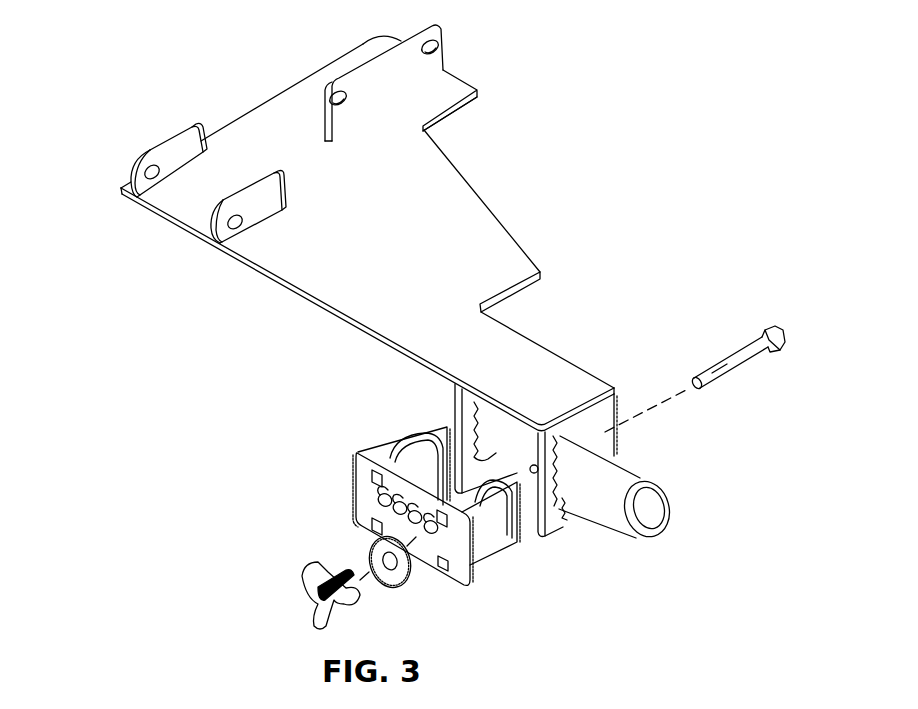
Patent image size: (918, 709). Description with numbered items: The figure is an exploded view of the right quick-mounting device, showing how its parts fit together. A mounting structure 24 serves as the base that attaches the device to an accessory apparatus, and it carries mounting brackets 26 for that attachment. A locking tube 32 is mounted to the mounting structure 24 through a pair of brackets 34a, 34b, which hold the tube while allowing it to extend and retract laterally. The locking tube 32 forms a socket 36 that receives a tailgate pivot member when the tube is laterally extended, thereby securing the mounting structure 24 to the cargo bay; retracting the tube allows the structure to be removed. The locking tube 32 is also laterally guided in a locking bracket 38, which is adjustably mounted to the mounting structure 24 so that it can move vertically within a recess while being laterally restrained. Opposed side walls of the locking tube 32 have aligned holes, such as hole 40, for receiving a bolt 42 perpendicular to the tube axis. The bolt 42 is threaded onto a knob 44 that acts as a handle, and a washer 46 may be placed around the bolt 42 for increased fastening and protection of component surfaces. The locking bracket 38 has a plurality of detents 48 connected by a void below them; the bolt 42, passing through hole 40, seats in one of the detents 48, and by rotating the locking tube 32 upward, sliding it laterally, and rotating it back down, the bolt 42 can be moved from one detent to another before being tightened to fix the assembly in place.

The mounting structure 24 is at (412, 200).
The mounting brackets 26 is at (383, 62).
The locking tube 32 is at (610, 483).
The bracket 34a is at (557, 525).
The bracket 34b is at (462, 413).
The socket 36 is at (601, 355).
The locking bracket 38 is at (345, 492).
The hole 40 is at (530, 470).
The bolt 42 is at (745, 352).
The knob 44 is at (318, 567).
The washer 46 is at (383, 550).
The detents 48 is at (440, 530).